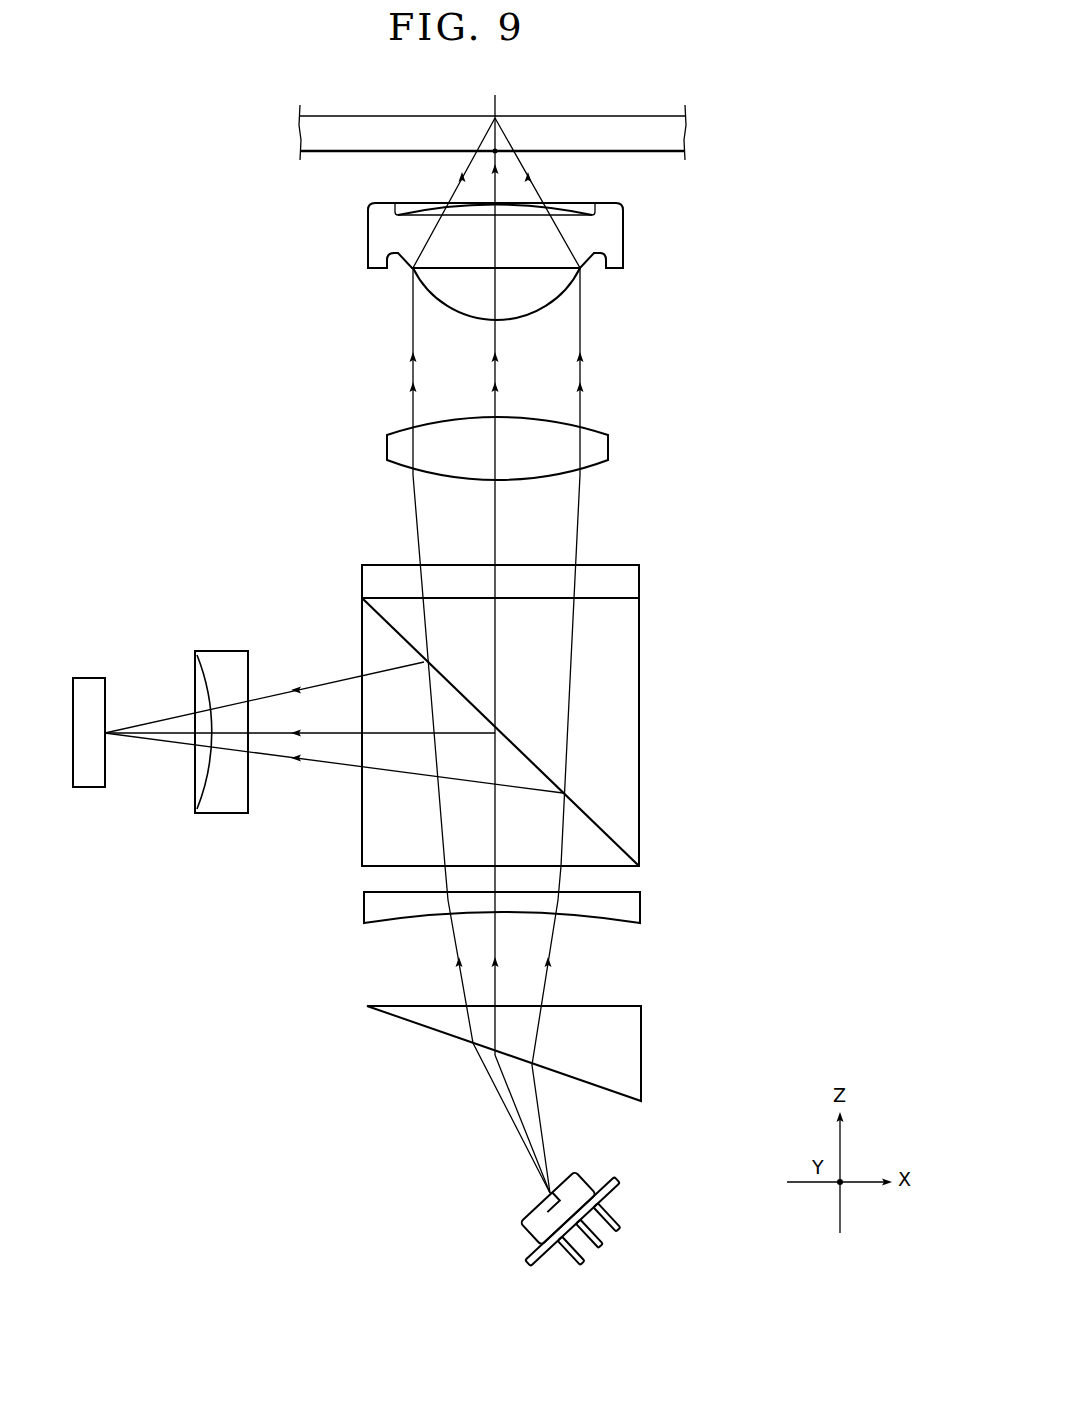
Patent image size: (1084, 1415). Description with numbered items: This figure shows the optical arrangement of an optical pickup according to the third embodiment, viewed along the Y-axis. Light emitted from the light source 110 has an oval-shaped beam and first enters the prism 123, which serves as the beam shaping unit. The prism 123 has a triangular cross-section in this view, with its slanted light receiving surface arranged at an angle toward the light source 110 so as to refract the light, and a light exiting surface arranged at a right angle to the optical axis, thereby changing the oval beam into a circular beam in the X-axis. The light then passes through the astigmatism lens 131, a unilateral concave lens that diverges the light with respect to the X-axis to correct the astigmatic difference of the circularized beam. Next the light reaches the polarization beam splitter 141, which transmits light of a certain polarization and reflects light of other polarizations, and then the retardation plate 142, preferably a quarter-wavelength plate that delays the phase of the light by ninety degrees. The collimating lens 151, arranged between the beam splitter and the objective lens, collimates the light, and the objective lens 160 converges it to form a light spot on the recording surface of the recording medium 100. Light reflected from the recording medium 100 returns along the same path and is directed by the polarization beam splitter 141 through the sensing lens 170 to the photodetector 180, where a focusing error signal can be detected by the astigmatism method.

The recording medium 100 is at (688, 133).
The objective lens 160 is at (620, 236).
The collimating lens 151 is at (605, 442).
The retardation plate 142 is at (640, 582).
The polarization beam splitter 141 is at (627, 776).
The astigmatism lens 131 is at (630, 913).
The prism 123 is at (638, 1054).
The light source 110 is at (580, 1188).
The sensing lens 170 is at (232, 812).
The photodetector 180 is at (83, 780).